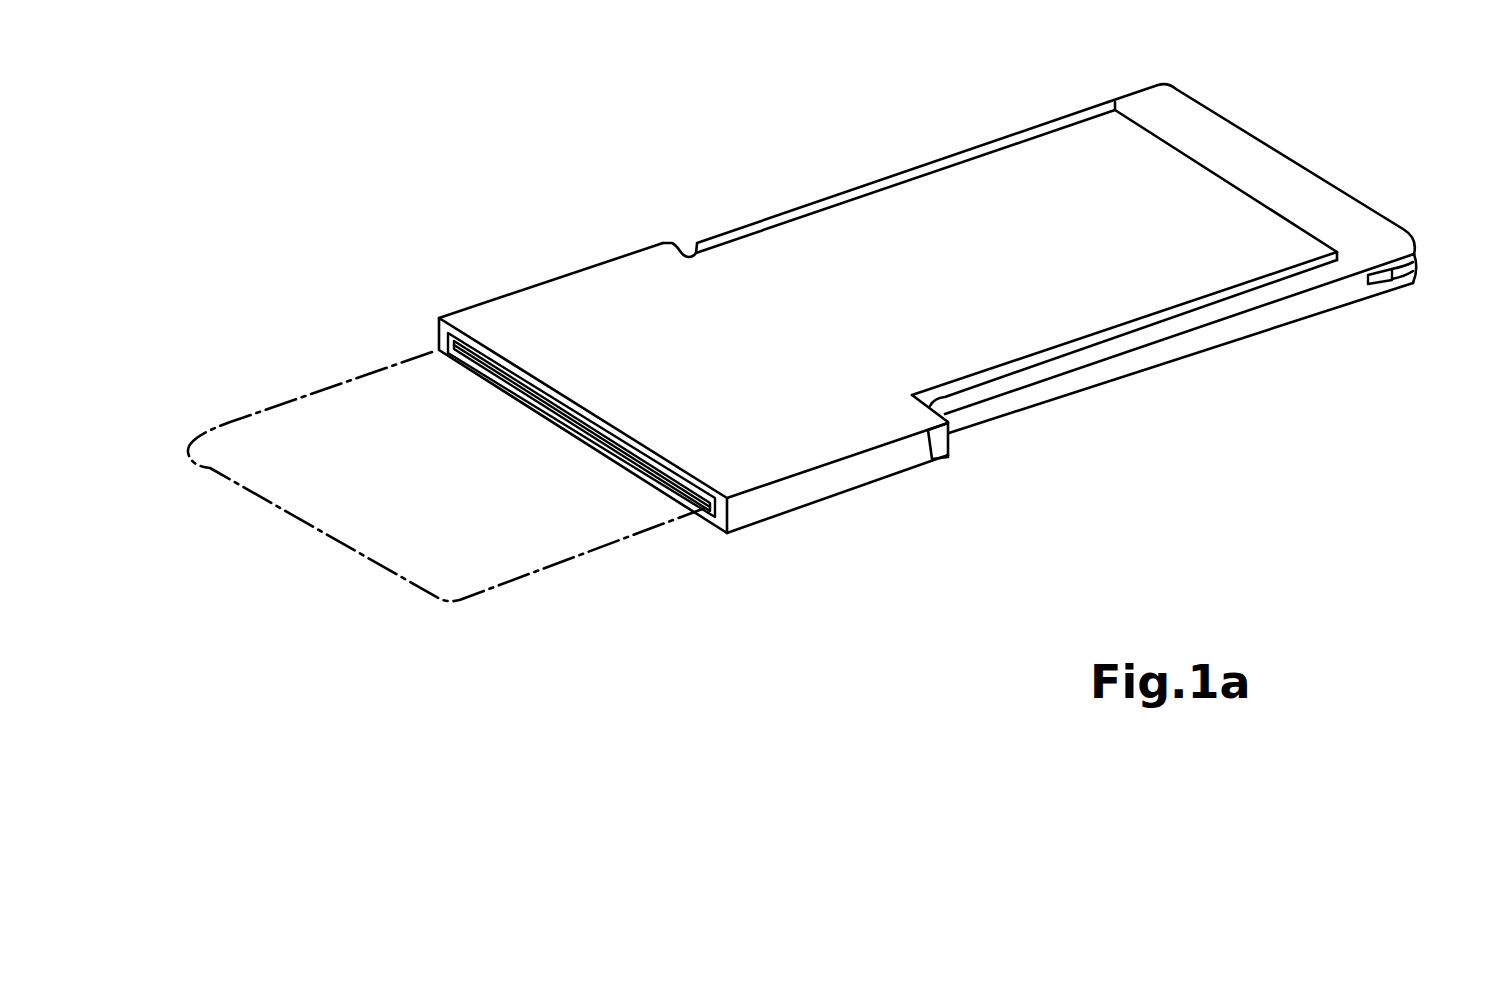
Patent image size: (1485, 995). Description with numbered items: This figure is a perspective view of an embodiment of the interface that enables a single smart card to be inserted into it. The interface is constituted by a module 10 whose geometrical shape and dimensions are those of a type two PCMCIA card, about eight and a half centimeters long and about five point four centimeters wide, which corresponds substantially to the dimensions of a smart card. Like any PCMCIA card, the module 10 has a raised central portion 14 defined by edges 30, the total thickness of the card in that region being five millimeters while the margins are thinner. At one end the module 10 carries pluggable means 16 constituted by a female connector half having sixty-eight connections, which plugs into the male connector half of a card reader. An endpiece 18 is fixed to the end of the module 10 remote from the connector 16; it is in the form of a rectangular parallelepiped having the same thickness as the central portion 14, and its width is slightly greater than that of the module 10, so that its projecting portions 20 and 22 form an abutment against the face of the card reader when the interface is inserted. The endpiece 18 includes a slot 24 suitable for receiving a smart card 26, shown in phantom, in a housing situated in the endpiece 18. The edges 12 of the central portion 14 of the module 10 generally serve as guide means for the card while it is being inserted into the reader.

The module 10 is at (960, 345).
The edges 12 is at (1237, 327).
The raised central portion 14 is at (1073, 153).
The pluggable means 16 is at (1387, 277).
The endpiece 18 is at (545, 310).
The projecting portion 20 is at (680, 255).
The projecting portion 22 is at (932, 428).
The slot 24 is at (700, 512).
The smart card 26 is at (232, 447).
The edges 30 is at (853, 192).